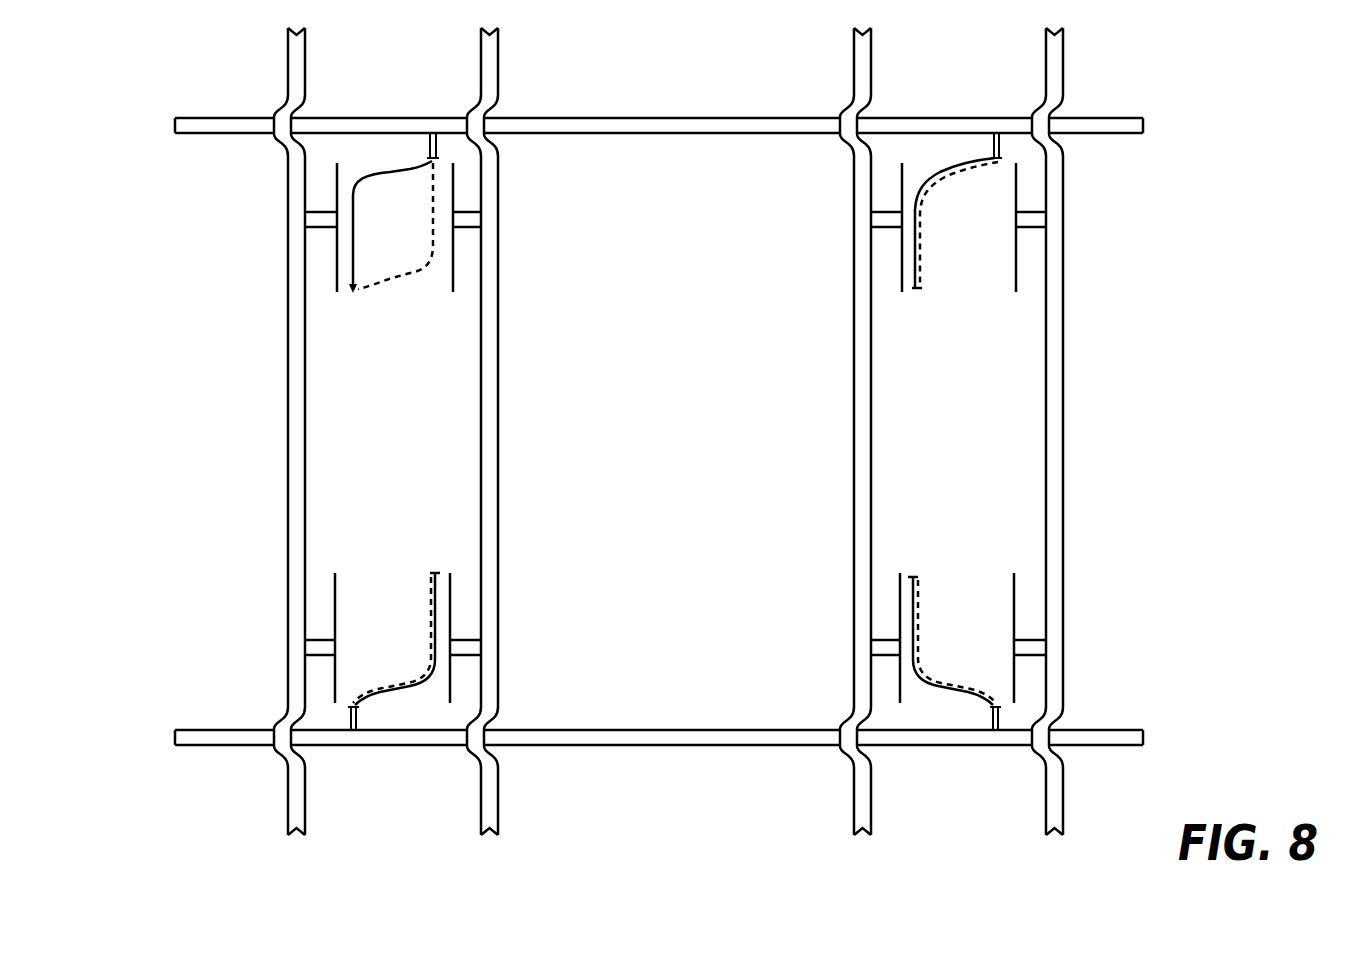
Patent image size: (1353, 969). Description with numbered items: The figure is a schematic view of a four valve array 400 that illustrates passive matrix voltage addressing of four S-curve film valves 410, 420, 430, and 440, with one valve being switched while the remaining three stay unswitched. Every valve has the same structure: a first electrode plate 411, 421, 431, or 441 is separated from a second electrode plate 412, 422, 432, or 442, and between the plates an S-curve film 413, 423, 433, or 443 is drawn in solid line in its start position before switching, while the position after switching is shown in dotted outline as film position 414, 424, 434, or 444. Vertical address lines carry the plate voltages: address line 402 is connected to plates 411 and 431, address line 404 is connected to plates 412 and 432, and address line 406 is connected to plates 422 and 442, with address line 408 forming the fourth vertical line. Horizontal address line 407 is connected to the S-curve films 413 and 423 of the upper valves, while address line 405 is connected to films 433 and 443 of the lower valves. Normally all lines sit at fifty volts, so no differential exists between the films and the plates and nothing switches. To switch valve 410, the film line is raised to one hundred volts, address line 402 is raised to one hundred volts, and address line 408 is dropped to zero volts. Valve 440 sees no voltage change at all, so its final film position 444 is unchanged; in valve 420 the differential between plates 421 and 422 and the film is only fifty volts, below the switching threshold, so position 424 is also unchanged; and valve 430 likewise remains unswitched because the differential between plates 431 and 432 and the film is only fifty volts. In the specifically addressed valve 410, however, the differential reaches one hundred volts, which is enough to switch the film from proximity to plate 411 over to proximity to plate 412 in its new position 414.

The four valve array 400 is at (1256, 177).
The address line 402 is at (298, 58).
The address line 404 is at (490, 58).
The address line 405 is at (636, 743).
The address line 406 is at (865, 63).
The address line 407 is at (628, 127).
The address line 408 is at (1057, 60).
The S-curve film valve 410 is at (590, 205).
The first electrode plate 411 is at (337, 267).
The second electrode plate 412 is at (453, 267).
The S-curve film 413 is at (390, 172).
The after-switching film position 414 is at (400, 278).
The S-curve film valve 420 is at (834, 214).
The first electrode plate 421 is at (902, 267).
The second electrode plate 422 is at (1017, 267).
The S-curve film 423 is at (953, 170).
The after-switching film position 424 is at (923, 273).
The S-curve film valve 430 is at (590, 675).
The first electrode plate 431 is at (333, 597).
The second electrode plate 432 is at (450, 597).
The S-curve film 433 is at (393, 692).
The after-switching film position 434 is at (428, 593).
The S-curve film valve 440 is at (832, 650).
The first electrode plate 441 is at (899, 600).
The second electrode plate 442 is at (1017, 600).
The S-curve film 443 is at (952, 697).
The after-switching film position 444 is at (920, 593).